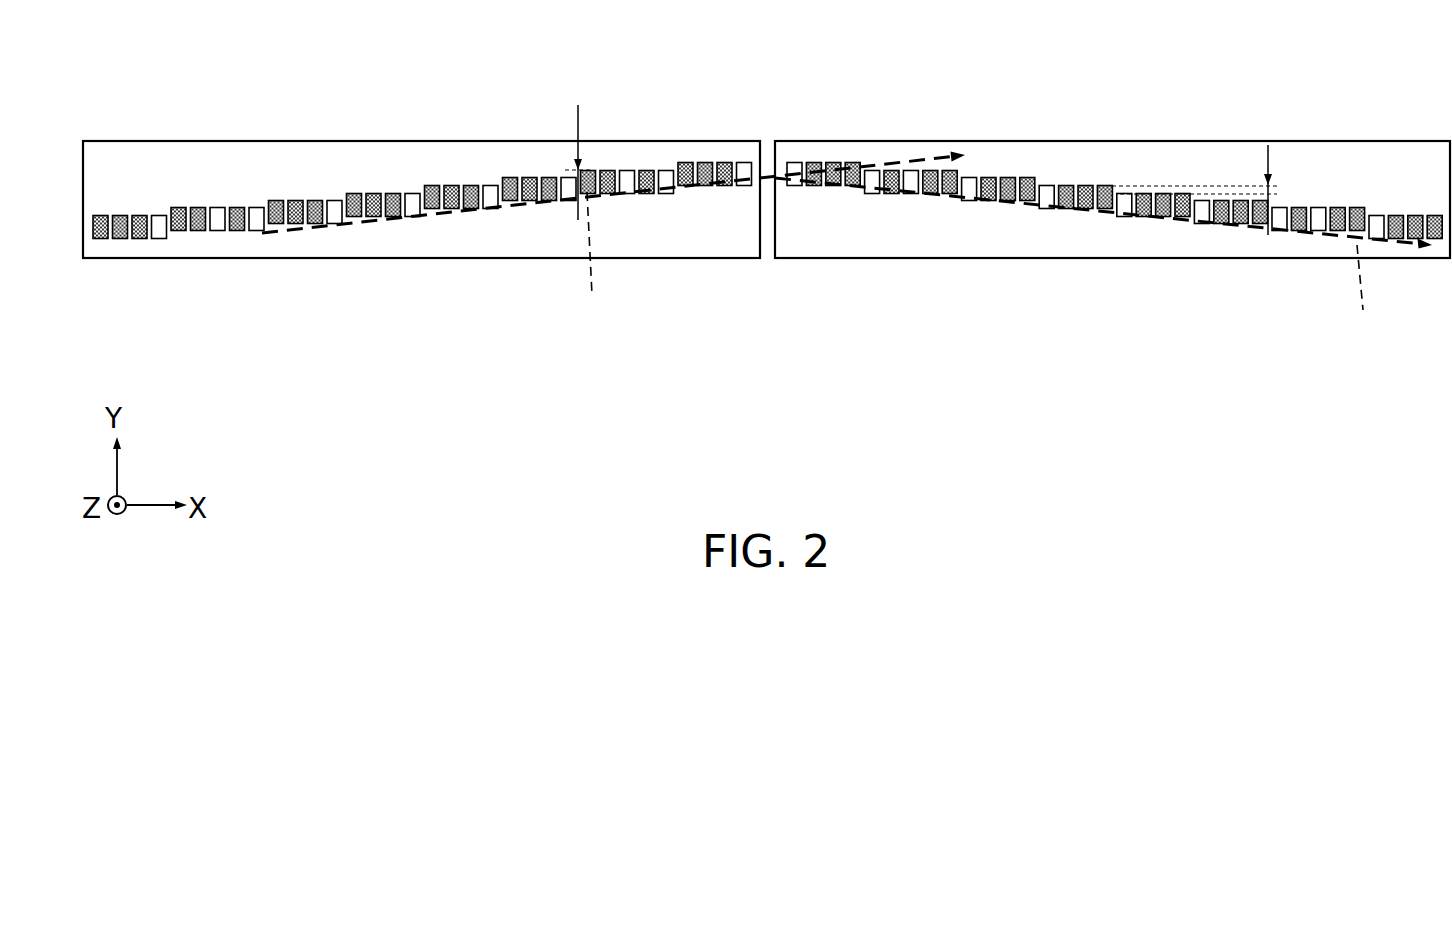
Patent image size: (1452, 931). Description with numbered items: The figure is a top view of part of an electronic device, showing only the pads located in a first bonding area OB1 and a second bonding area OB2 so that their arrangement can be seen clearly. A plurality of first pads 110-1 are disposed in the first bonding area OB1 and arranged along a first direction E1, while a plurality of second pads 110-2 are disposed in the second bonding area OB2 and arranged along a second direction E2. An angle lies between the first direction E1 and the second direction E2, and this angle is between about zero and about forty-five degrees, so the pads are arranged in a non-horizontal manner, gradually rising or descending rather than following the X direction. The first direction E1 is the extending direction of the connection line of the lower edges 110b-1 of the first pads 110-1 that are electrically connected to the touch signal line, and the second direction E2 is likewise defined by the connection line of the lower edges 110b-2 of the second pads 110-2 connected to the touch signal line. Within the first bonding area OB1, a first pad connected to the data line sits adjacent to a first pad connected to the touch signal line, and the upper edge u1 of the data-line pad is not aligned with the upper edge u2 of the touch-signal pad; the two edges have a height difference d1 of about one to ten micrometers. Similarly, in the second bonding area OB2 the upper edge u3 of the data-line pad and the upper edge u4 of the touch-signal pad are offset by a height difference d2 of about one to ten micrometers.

The first pads 110-1 is at (422, 133).
The second pads 110-2 is at (1114, 133).
The lower edges of the first pads 110b-1 is at (408, 220).
The lower edges of the second pads 110b-2 is at (1045, 212).
The upper edge of the first pad connected to the data line u1 is at (525, 147).
The upper edge of the first pad connected to the touch signal line u2 is at (485, 176).
The upper edge of the second pad connected to the data line u3 is at (1103, 183).
The upper edge of the second pad connected to the touch signal line u4 is at (1143, 153).
The height difference d1 is at (592, 162).
The height difference d2 is at (1215, 190).
The first direction E1 is at (593, 260).
The second direction E2 is at (1363, 295).
The first bonding area OB1 is at (285, 260).
The second bonding area OB2 is at (1115, 260).